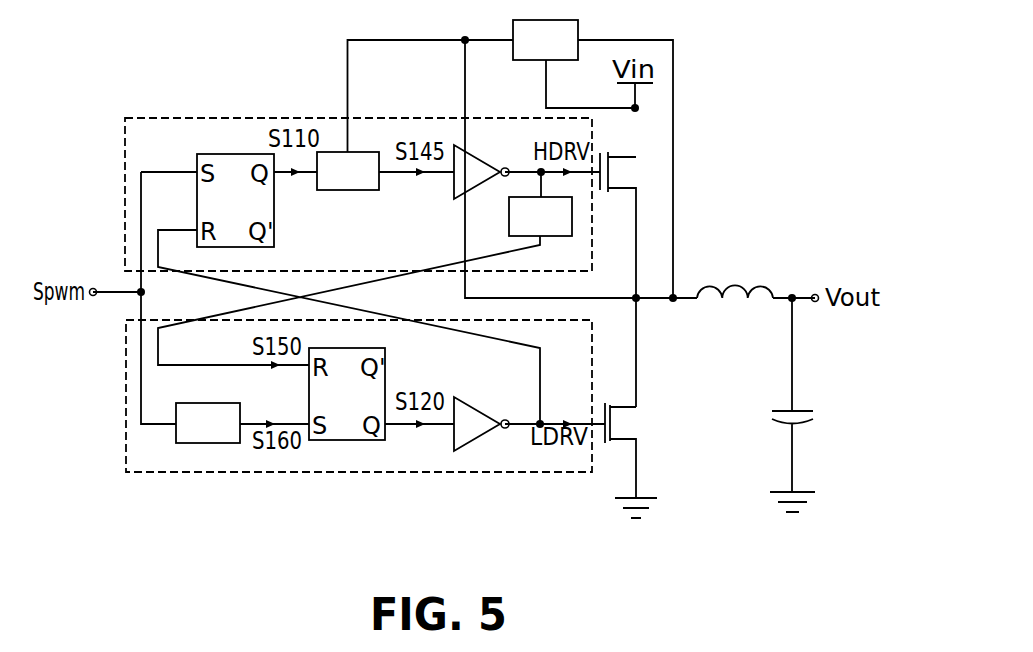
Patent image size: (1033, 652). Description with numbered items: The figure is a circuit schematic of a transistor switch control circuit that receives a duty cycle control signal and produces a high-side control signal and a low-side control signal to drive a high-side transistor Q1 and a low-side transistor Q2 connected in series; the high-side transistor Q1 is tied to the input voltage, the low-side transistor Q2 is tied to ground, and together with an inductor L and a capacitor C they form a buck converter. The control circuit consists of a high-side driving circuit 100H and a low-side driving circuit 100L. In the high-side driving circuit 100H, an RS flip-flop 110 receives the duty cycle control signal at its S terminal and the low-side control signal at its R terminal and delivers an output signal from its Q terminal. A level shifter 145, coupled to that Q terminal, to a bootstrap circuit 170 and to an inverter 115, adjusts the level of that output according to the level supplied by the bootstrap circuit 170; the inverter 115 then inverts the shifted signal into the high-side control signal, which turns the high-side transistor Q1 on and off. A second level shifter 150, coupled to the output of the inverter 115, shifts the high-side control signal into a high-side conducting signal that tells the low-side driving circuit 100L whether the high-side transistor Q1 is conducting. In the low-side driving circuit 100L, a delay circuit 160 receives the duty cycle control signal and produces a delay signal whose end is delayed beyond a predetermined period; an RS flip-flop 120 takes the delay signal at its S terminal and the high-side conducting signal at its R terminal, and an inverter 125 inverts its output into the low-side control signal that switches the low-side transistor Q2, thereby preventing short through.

The high-side driving circuit 100H is at (125, 172).
The low-side driving circuit 100L is at (125, 372).
The RS flip-flop 110 is at (274, 238).
The inverter 115 is at (477, 165).
The RS flip-flop 120 is at (389, 374).
The inverter 125 is at (479, 418).
The level shifter 145 is at (368, 185).
The level shifter 150 is at (560, 231).
The delay circuit 160 is at (228, 437).
The bootstrap circuit 170 is at (565, 54).
The high-side transistor Q1 is at (613, 214).
The low-side transistor Q2 is at (611, 464).
The inductor L is at (729, 267).
The capacitor C is at (758, 418).